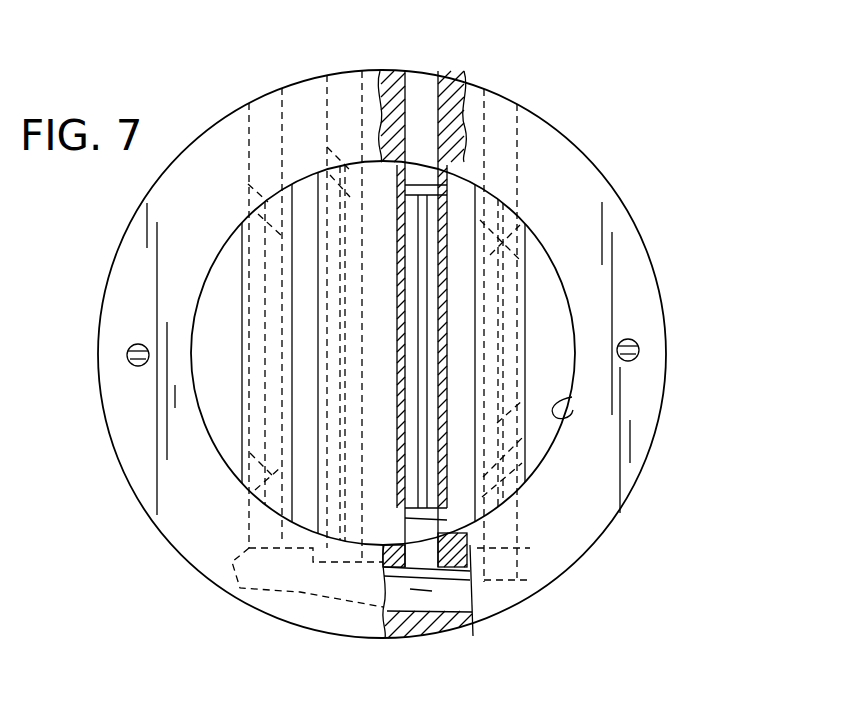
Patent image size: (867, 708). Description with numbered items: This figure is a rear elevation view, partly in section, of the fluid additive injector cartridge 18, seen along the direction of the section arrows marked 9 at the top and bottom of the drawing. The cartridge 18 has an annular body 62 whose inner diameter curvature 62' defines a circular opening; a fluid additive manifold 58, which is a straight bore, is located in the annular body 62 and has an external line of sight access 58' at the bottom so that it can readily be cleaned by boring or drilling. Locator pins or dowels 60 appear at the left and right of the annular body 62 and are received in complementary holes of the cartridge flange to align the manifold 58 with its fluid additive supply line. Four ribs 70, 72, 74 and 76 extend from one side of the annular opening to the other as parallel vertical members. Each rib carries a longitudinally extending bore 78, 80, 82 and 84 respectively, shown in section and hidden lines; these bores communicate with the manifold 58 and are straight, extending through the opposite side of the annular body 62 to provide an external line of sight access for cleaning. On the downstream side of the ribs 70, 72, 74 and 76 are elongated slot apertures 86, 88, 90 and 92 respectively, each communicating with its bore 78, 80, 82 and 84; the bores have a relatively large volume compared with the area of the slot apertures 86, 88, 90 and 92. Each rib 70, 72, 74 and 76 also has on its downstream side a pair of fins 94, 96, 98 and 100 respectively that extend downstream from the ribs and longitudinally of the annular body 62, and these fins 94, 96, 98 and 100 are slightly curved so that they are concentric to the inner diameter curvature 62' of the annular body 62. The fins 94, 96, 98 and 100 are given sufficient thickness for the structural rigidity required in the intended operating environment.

The fluid additive injector cartridge 18 is at (672, 226).
The annular body 62 is at (454, 358).
The inner diameter curvature 62' is at (613, 398).
The locator pin 60 is at (127, 355).
The rib 70 is at (527, 302).
The rib 76 is at (238, 330).
The rib 74 is at (317, 246).
The elongated slot aperture 90 is at (338, 309).
The elongated slot aperture 92 is at (240, 362).
The longitudinally extending bore 84 is at (262, 90).
The longitudinally extending bore 82 is at (343, 66).
The longitudinally extending bore 78 is at (510, 80).
The longitudinally extending bore 80 is at (428, 62).
The fins 96 is at (420, 182).
The rib 72 is at (452, 222).
The elongated slot aperture 88 is at (426, 322).
The fins 94 is at (505, 240).
The elongated slot aperture 86 is at (522, 408).
The fins 100 is at (250, 184).
The fins 98 is at (332, 148).
The fluid additive manifold 58 is at (302, 602).
The external line of sight access 58' is at (527, 591).
The section line 9- 9 is at (350, 30).